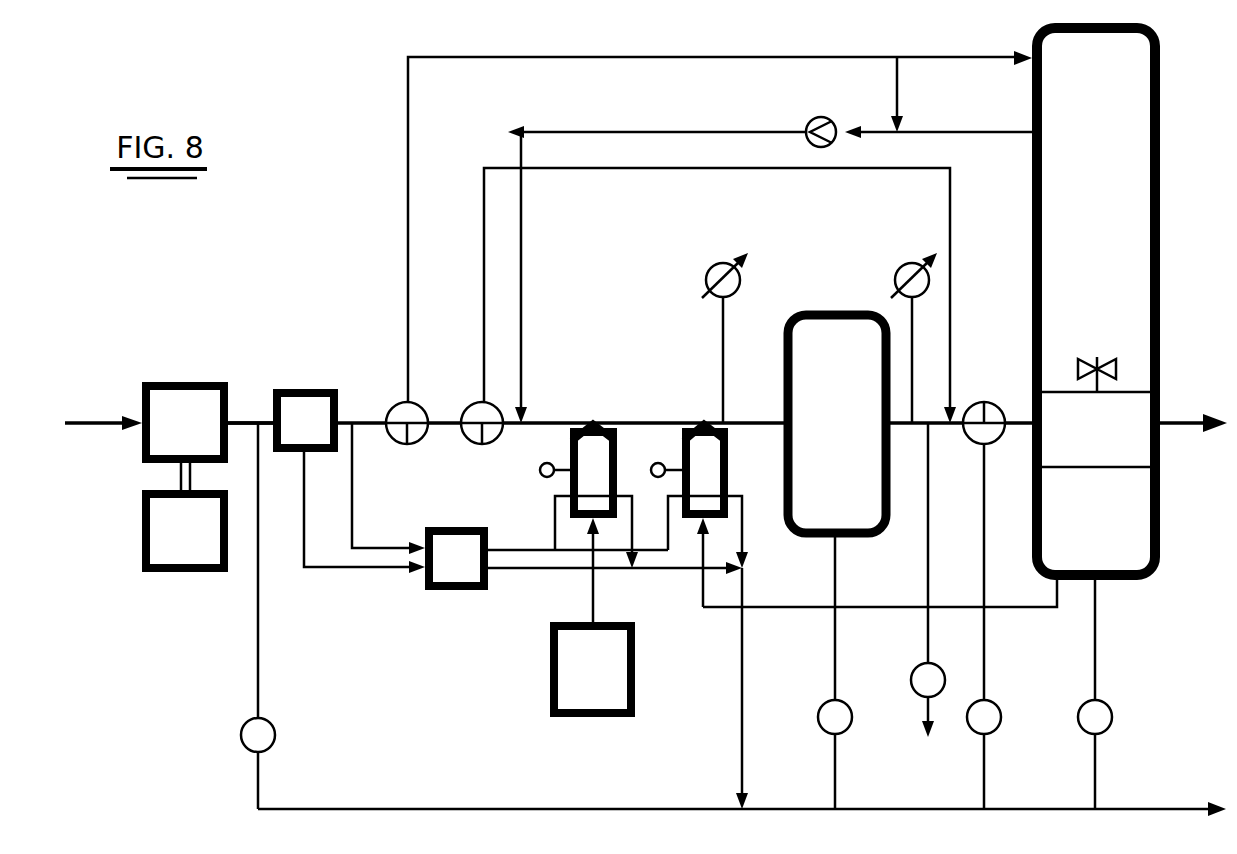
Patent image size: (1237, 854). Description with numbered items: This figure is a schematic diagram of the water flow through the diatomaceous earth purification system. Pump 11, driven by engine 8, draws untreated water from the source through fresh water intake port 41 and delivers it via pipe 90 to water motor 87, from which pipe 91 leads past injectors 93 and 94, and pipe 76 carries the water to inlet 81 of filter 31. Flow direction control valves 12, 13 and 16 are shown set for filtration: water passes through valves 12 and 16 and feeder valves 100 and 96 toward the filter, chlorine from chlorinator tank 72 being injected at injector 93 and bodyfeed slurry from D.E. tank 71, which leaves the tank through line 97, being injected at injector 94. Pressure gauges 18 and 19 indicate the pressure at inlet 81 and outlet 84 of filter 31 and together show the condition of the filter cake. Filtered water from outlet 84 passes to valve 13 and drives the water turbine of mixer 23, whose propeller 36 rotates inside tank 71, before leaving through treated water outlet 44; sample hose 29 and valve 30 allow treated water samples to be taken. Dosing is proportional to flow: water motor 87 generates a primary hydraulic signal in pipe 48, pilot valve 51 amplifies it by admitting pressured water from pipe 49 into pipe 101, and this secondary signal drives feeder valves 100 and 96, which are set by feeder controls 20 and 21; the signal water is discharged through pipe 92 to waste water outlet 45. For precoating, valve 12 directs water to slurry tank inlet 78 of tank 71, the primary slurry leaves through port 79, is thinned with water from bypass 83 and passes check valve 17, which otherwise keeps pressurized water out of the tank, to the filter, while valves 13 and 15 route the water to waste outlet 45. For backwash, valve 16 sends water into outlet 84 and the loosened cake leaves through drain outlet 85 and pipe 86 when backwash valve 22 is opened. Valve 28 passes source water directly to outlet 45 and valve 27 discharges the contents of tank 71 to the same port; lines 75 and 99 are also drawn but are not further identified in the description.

The engine 8 is at (207, 550).
The pump 11 is at (170, 382).
The flow direction control valve 12 is at (395, 430).
The flow direction control valve 13 is at (987, 418).
The valve 15 is at (995, 720).
The flow direction control valve 16 is at (473, 408).
The check valve 17 is at (810, 121).
The pressure gauge 18 is at (720, 263).
The pressure gauge 19 is at (902, 267).
The feeder control 20 is at (539, 469).
The feeder control 21 is at (652, 466).
The backwash valve 22 is at (825, 725).
The mixer 23 is at (1133, 457).
The valve 27 is at (1103, 723).
The valve 28 is at (273, 732).
The sample hose 29 is at (930, 585).
The valve 30 is at (917, 685).
The filter 31 is at (837, 367).
The propeller 36 is at (1110, 363).
The fresh water intake port 41 is at (90, 418).
The treated water outlet 44 is at (1181, 418).
The waste water outlet 45 is at (1205, 807).
The pipe 48 is at (327, 565).
The pipe 49 is at (353, 488).
The pilot valve 51 is at (452, 570).
The D.E. tank 71 is at (1130, 290).
The chlorinator tank 72 is at (548, 670).
The return line 75 is at (900, 418).
The pipe 76 is at (735, 423).
The slurry tank inlet 78 is at (1025, 55).
The port 79 is at (1033, 138).
The filter inlet port 81 is at (778, 433).
The water bypass 83 is at (897, 90).
The filter outlet port 84 is at (893, 427).
The filter drain outlet 85 is at (836, 538).
The pipe 86 is at (833, 625).
The water motor 87 is at (317, 400).
The pipe 90 is at (245, 418).
The pipe 91 is at (618, 423).
The pipe 92 is at (527, 571).
The injector 93 is at (592, 423).
The injector 94 is at (703, 423).
The feeder valve 96 is at (692, 423).
The line 97 is at (717, 608).
The feed line 99 is at (590, 583).
The feeder valve 100 is at (577, 422).
The pipe 101 is at (507, 548).